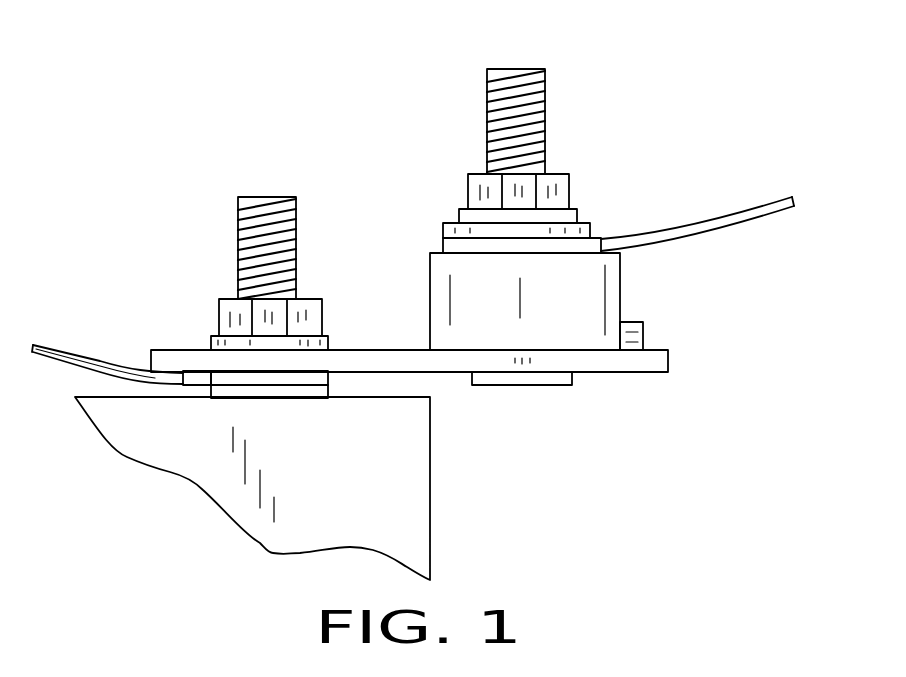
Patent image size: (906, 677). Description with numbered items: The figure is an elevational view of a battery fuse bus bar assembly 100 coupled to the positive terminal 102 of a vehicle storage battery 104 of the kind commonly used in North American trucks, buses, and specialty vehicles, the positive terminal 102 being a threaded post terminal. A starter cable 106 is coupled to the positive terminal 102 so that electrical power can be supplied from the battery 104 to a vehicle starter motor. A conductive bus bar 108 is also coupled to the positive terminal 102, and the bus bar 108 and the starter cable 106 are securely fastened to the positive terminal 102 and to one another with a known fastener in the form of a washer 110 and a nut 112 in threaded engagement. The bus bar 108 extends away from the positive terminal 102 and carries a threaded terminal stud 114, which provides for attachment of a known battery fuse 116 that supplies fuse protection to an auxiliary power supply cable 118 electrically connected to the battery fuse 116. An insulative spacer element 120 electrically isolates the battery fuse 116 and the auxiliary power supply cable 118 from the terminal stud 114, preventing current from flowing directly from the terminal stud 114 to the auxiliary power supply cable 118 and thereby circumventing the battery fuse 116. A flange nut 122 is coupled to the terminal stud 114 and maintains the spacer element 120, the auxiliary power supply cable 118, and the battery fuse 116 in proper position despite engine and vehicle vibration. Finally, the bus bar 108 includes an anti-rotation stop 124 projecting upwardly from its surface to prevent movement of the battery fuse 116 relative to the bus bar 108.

The battery fuse bus bar assembly 100 is at (374, 76).
The positive terminal 102 is at (270, 199).
The vehicle storage battery 104 is at (398, 496).
The starter cable 106 is at (55, 350).
The conductive bus bar 108 is at (373, 357).
The washer 110 is at (211, 343).
The nut 112 is at (235, 315).
The threaded terminal stud 114 is at (520, 77).
The battery fuse 116 is at (595, 305).
The auxiliary power supply cable 118 is at (701, 223).
The insulative spacer element 120 is at (592, 231).
The flange nut 122 is at (559, 187).
The anti-rotation stop 124 is at (645, 326).